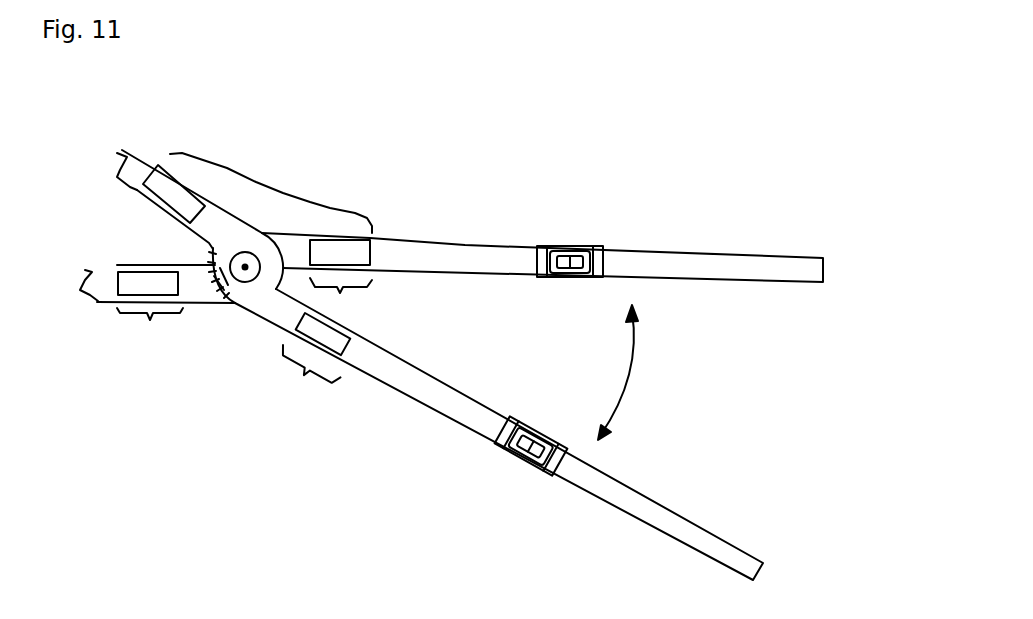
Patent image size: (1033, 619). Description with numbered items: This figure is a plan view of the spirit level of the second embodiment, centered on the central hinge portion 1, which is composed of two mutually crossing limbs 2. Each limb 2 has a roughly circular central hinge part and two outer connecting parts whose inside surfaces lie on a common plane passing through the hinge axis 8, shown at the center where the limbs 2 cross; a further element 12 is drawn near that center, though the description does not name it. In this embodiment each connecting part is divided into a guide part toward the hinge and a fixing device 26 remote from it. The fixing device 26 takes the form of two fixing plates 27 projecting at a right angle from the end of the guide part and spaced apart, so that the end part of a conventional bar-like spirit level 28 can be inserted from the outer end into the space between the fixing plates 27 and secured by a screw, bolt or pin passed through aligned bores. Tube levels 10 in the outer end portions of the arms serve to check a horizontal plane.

The central hinge portion 1 is at (256, 182).
The limb 2 is at (268, 302).
The hinge axis 8 is at (245, 267).
The tube level 10 is at (573, 250).
The pivot axis 12 is at (245, 267).
The fixing device 26 is at (367, 445).
The fixing plate 27 is at (137, 190).
The conventional spirit level 28 is at (130, 152).